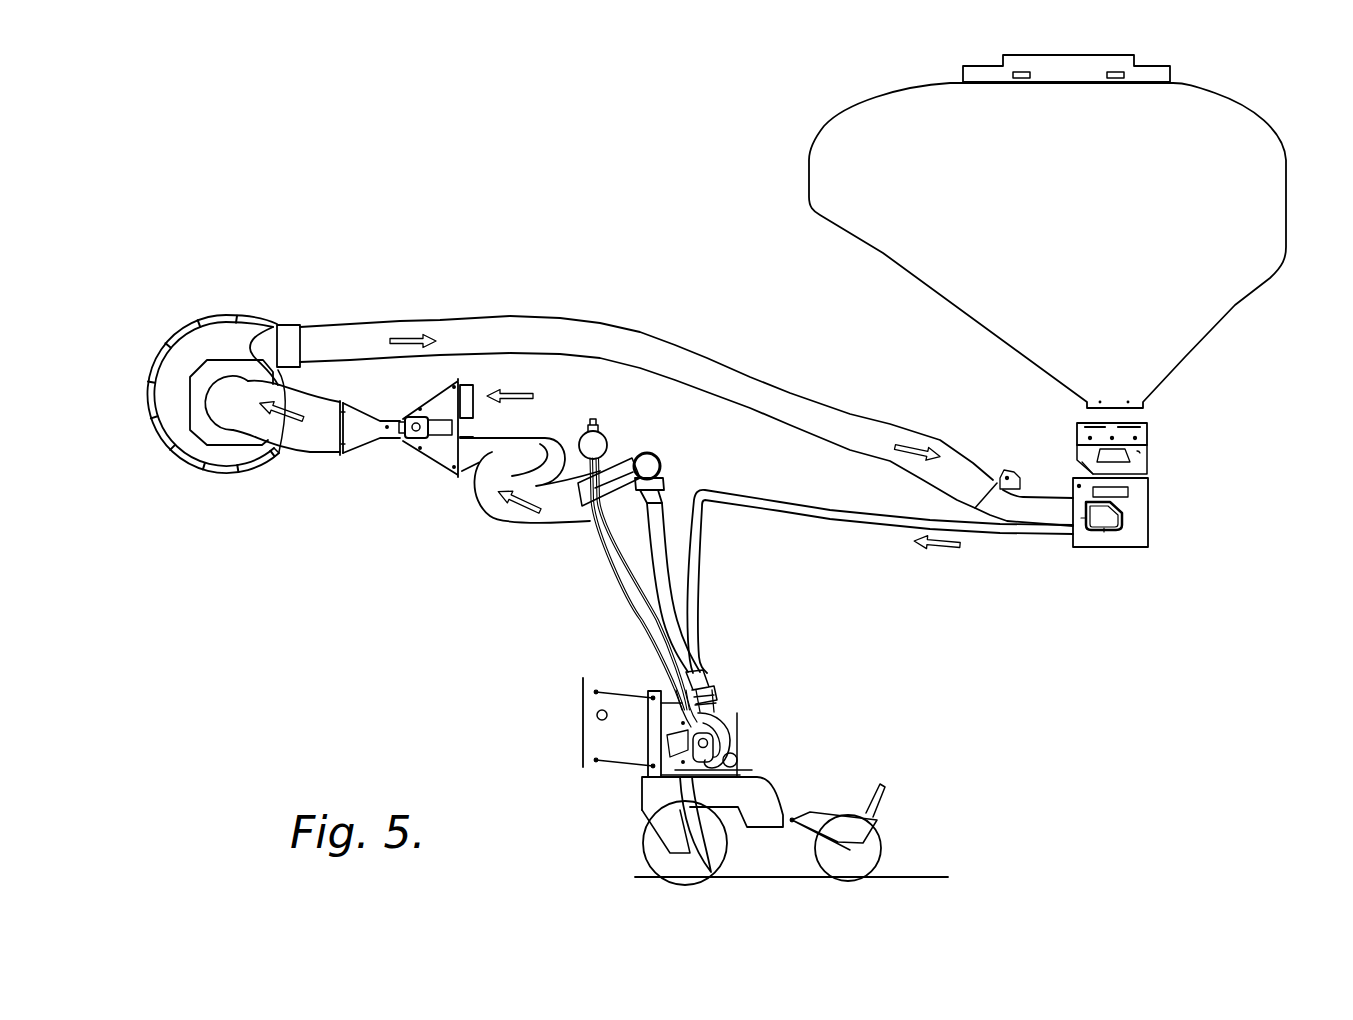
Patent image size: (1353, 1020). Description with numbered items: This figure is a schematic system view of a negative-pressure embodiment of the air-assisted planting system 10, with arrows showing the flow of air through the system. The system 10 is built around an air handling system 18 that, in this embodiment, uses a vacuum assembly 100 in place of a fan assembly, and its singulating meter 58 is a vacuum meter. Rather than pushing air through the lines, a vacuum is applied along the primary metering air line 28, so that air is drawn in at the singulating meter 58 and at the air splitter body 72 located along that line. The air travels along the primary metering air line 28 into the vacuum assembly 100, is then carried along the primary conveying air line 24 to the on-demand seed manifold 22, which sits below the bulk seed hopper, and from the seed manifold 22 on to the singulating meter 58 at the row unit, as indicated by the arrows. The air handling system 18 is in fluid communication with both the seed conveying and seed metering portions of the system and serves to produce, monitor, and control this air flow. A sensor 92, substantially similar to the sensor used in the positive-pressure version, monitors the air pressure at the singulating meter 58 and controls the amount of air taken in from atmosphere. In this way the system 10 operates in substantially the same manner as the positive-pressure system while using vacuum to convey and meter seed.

The air-assisted planting system 10 is at (541, 256).
The primary conveying air line 24 is at (697, 355).
The on-demand seed manifold 22 is at (1140, 527).
The vacuum assembly 100 is at (188, 517).
The air handling system 18 is at (380, 498).
The air splitter body 72 is at (447, 411).
The primary metering air line 28 is at (507, 509).
The sensor 92 is at (604, 437).
The singulating meter 58 is at (772, 708).